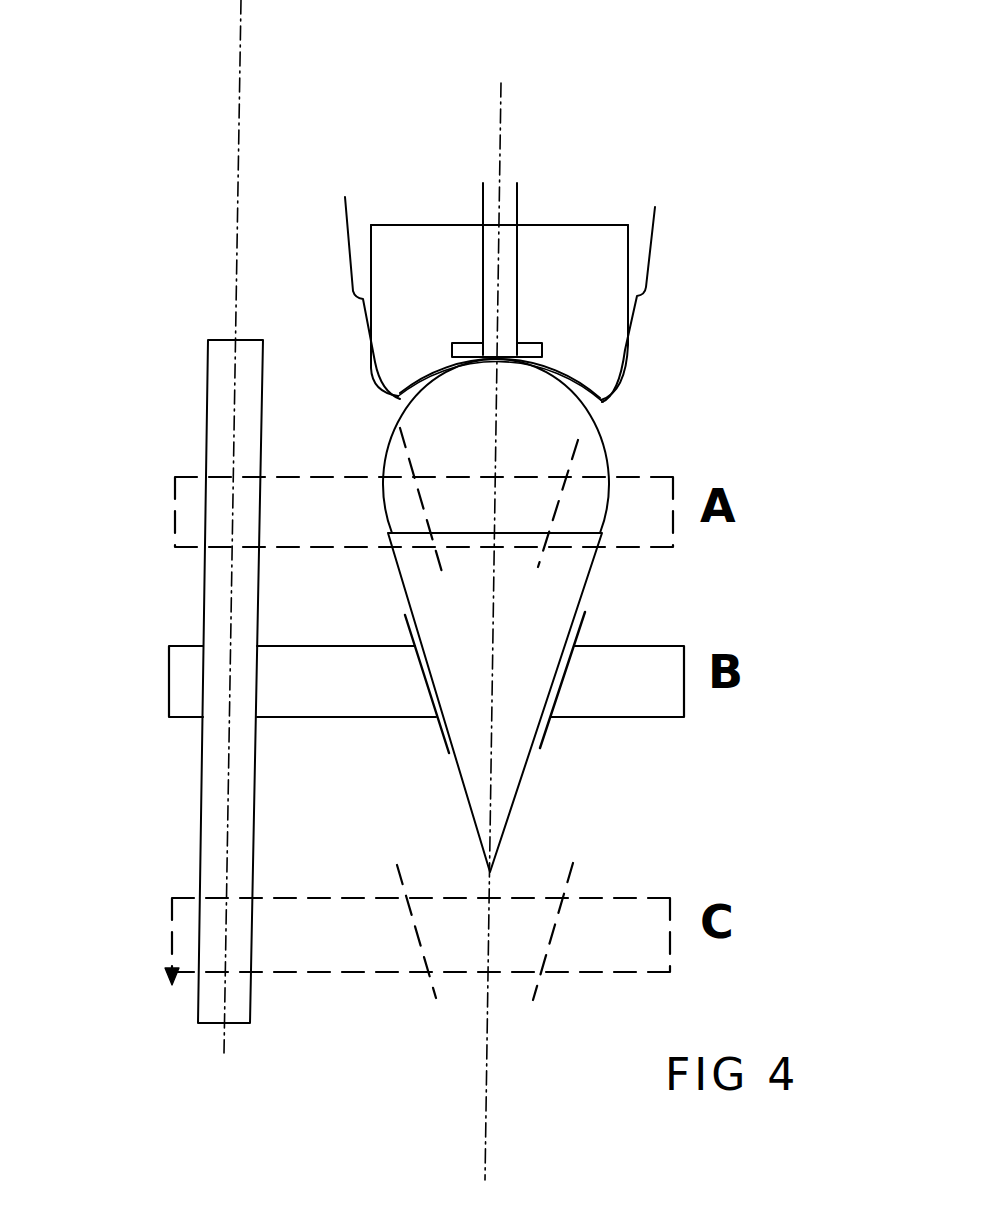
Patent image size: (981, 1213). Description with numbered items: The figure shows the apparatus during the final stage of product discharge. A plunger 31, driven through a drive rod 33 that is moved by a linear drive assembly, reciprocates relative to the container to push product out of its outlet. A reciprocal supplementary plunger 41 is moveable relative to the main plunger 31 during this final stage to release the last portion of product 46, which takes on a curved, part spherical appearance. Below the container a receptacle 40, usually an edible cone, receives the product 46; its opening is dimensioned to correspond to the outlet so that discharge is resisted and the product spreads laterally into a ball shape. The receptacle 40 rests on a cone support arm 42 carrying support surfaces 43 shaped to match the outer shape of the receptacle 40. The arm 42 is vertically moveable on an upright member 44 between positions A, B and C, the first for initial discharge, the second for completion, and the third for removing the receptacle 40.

The plunger 31 is at (668, 319).
The drive rod 33 is at (508, 203).
The receptacle 40 is at (573, 583).
The supplementary plunger 41 is at (508, 348).
The cone support arm 42 is at (658, 483).
The support surfaces 43 is at (577, 443).
The upright member 44 is at (203, 608).
The product 46 is at (382, 452).